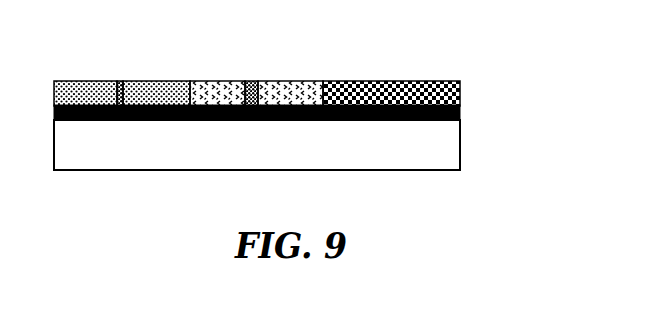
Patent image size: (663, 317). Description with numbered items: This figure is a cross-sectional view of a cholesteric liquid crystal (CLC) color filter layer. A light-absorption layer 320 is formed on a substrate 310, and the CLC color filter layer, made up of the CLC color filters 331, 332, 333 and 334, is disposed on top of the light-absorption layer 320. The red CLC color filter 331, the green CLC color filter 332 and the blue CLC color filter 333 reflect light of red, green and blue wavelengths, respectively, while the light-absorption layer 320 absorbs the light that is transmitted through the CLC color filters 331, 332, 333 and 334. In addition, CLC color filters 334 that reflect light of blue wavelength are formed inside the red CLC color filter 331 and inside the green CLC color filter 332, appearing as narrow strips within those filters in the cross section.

The substrate 310 is at (436, 155).
The light-absorption layer 320 is at (460, 112).
The red CLC color filter 331 is at (83, 81).
The green CLC color filter 332 is at (300, 82).
The blue CLC color filter 333 is at (402, 82).
The CLC color filters reflecting blue wavelength 334 is at (122, 81).